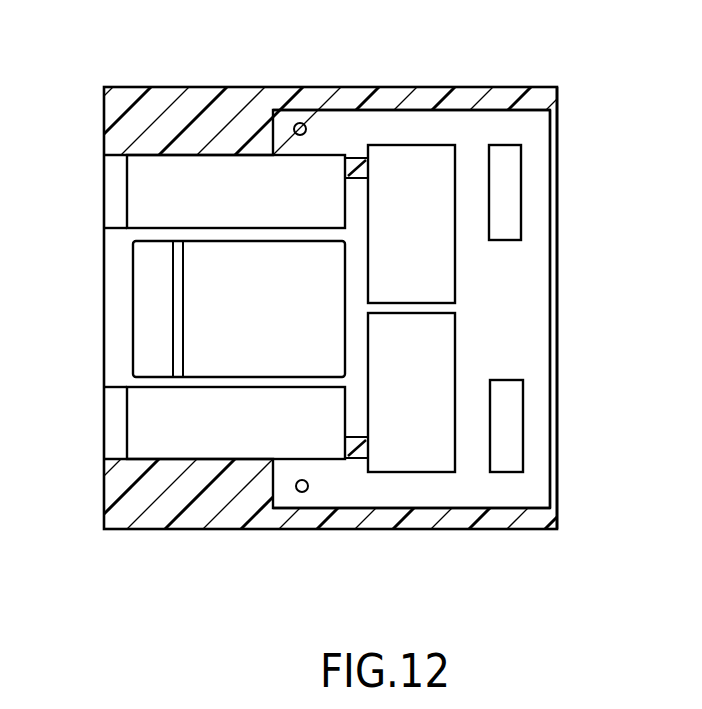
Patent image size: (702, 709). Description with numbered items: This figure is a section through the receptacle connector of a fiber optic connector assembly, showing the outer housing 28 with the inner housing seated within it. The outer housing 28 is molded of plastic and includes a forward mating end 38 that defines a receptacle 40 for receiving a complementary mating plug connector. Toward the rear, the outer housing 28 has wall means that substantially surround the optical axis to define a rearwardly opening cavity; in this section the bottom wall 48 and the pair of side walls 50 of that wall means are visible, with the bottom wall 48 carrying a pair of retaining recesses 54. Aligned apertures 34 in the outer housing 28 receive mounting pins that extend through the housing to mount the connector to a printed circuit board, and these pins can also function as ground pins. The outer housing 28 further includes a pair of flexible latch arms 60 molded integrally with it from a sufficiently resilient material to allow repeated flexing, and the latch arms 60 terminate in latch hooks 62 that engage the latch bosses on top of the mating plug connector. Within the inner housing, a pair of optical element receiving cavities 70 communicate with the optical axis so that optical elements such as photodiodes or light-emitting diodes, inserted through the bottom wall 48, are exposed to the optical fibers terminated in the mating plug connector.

The outer housing 28 is at (574, 97).
The forward mating end 38 is at (135, 108).
The apertures 34 is at (297, 123).
The optical element receiving cavities 70 is at (453, 195).
The side walls 50 is at (540, 108).
The retaining recesses 54 is at (510, 237).
The bottom wall 48 is at (537, 354).
The receptacle 40 is at (178, 155).
The latch hooks 62 is at (174, 304).
The flexible latch arms 60 is at (210, 350).